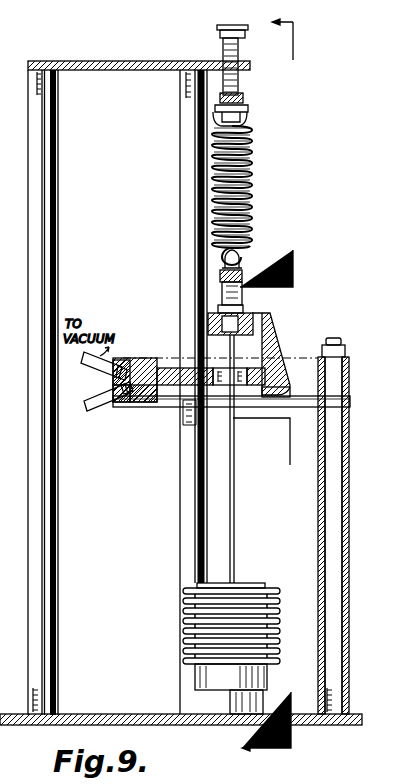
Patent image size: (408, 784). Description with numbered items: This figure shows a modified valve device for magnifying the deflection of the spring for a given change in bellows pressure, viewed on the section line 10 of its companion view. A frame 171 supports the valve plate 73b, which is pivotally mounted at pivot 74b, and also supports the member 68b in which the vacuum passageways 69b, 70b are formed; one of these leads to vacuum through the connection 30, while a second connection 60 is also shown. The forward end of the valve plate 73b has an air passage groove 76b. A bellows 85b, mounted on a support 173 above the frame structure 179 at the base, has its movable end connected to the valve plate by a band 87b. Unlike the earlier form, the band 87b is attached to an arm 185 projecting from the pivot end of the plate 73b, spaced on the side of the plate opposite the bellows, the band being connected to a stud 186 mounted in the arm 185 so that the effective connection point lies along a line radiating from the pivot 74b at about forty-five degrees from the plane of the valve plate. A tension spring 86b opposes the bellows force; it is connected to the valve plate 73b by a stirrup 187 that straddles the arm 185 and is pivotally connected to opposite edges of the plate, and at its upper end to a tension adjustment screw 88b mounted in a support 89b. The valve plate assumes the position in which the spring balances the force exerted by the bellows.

The section line 10— 10 is at (281, 389).
The vacuum tube 30 is at (94, 370).
The tube 60 is at (100, 413).
The member 68b is at (126, 405).
The vacuum passageway 69b is at (141, 362).
The vacuum passageway 70b is at (118, 403).
The valve plate 73b is at (134, 404).
The pivot 74b is at (292, 364).
The air passage groove 76b is at (151, 370).
The bellows 85b is at (187, 590).
The tension spring 86b is at (252, 152).
The band 87b is at (236, 491).
The tension adjustment screw 88b is at (221, 53).
The support 89b is at (119, 62).
The frame 171 is at (300, 396).
The support 173 is at (210, 683).
The frame structure 179 is at (164, 724).
The arm 185 is at (250, 314).
The stud 186 is at (255, 313).
The stirrup 187 is at (215, 283).